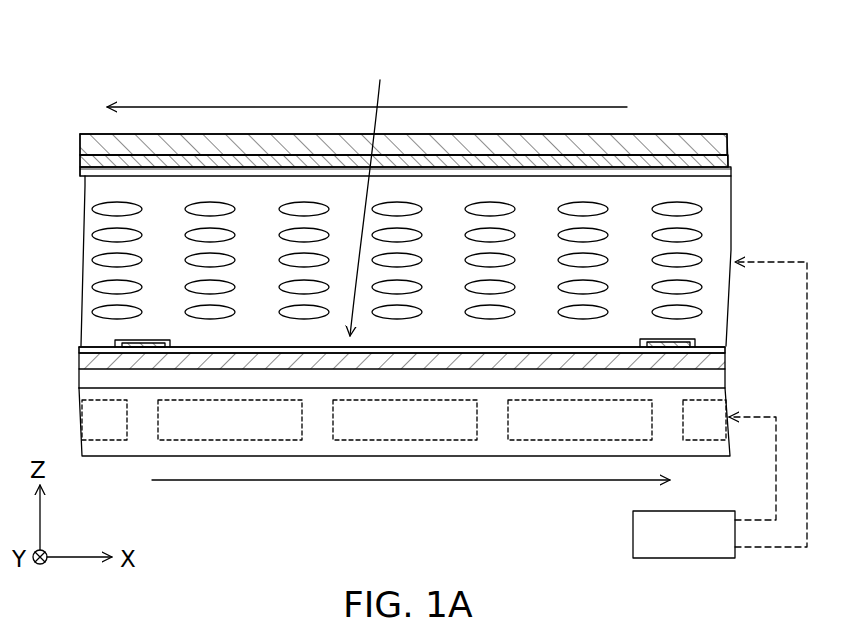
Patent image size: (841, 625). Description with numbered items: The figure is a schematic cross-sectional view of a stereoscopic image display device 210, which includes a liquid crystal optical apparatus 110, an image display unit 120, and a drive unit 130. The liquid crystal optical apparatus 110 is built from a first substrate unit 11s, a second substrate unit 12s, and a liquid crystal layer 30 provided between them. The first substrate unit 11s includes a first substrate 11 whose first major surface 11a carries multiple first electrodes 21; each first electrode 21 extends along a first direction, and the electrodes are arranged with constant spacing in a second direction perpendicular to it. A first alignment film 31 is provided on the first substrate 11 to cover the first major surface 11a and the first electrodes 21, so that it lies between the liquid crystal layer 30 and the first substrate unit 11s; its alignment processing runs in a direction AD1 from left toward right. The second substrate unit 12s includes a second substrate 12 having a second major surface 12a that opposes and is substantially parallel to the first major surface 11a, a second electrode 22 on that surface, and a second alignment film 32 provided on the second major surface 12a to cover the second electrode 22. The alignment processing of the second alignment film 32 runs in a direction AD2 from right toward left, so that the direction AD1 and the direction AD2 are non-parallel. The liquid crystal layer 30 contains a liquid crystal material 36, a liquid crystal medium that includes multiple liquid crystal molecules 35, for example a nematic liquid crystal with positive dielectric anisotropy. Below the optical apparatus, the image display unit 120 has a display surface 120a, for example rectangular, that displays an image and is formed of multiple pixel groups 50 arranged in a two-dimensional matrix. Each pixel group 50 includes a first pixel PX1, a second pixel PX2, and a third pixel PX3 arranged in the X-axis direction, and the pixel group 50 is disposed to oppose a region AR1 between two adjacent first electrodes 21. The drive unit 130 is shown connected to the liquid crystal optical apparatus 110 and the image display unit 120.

The stereoscopic image display device 210 is at (546, 79).
The liquid crystal layer 30 is at (84, 263).
The second substrate 12 is at (100, 145).
The liquid crystal optical apparatus 110 is at (654, 133).
The second substrate unit 12s is at (730, 160).
The second major surface 12a is at (695, 158).
The second electrode 22 is at (100, 160).
The second alignment film 32 is at (100, 172).
The liquid crystal material 36 is at (105, 222).
The liquid crystal molecules 35 is at (690, 233).
The first electrode 21 is at (140, 346).
The first alignment film 31 is at (103, 350).
The first major surface 11a is at (703, 350).
The first substrate 11 is at (103, 360).
The first substrate unit 11s is at (76, 380).
The image display unit 120 is at (117, 458).
The display surface 120a is at (700, 388).
The pixel group 50 is at (562, 525).
The first pixel PX1 is at (277, 441).
The second pixel PX2 is at (405, 441).
The third pixel PX3 is at (527, 441).
The drive unit 130 is at (703, 535).
The direction of the alignment processing of the second alignment film AD2 is at (313, 106).
The direction of the alignment processing of the first alignment film AD1 is at (590, 481).
The region between two adjacent first electrodes AR1 is at (375, 196).